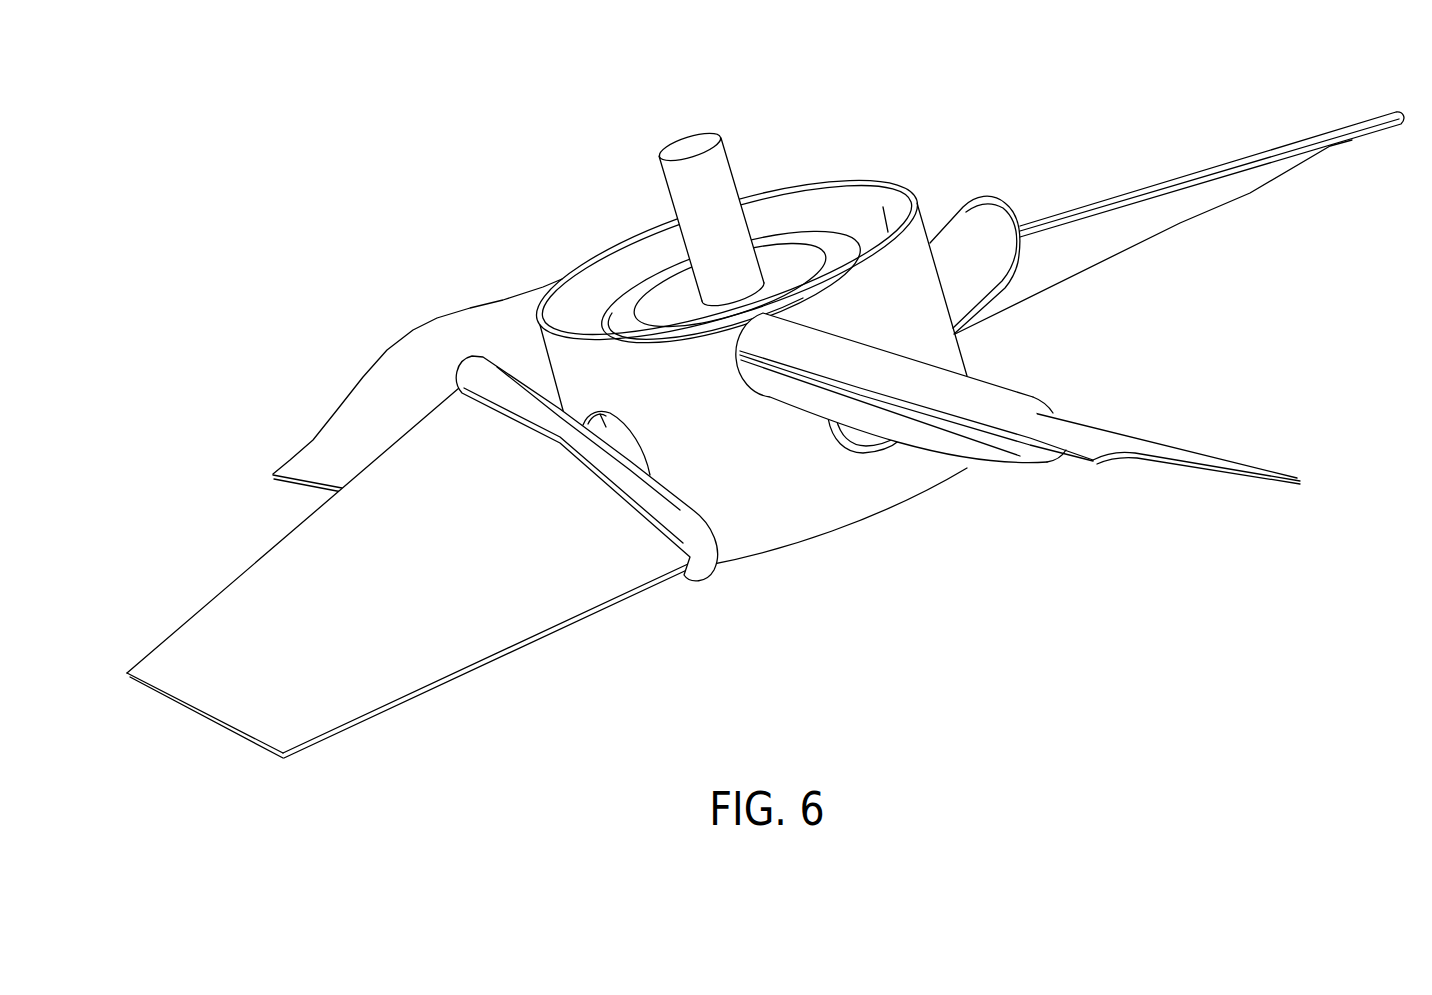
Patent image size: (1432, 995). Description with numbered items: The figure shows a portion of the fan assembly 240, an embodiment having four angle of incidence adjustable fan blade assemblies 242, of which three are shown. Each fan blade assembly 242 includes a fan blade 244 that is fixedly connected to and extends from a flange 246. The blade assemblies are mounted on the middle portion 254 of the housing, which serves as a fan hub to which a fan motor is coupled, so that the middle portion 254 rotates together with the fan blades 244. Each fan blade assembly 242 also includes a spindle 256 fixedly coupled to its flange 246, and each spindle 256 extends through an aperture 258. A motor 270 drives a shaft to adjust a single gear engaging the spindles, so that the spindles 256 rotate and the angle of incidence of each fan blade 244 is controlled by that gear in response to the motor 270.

The fan assembly 240 is at (765, 416).
The fan blade assembly 242 is at (765, 416).
The fan blade 244 is at (480, 318).
The flange 246 is at (972, 214).
The middle portion 254 is at (822, 523).
The spindle 256 is at (612, 437).
The aperture 258 is at (880, 457).
The motor 270 is at (690, 150).